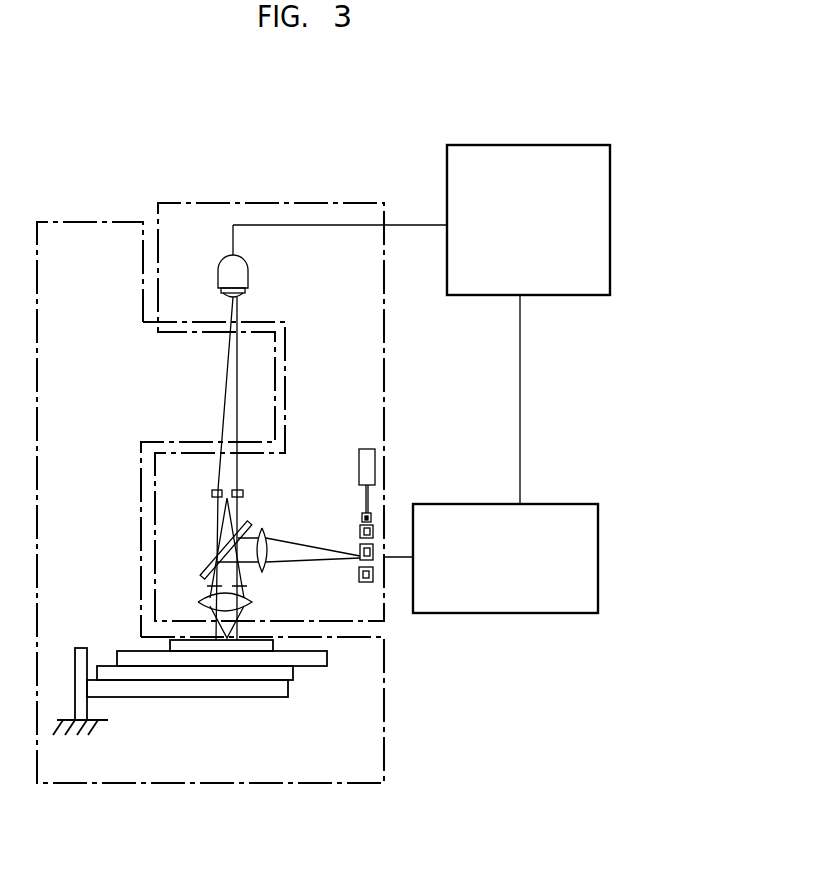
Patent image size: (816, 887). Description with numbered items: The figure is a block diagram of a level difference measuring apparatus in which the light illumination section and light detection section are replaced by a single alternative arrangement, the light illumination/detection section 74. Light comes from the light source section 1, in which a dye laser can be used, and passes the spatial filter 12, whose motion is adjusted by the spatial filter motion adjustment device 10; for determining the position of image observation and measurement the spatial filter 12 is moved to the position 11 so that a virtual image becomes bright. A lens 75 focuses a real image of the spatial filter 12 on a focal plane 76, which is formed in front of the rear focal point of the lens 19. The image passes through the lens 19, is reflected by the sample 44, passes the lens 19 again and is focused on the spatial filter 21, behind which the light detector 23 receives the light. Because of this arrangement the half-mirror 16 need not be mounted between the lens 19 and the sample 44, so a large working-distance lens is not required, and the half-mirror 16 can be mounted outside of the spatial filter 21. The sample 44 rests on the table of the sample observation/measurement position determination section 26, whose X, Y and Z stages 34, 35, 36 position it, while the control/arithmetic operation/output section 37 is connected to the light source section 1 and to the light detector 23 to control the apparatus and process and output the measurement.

The light source section 1 is at (493, 613).
The spatial filter motion adjustment device 10 is at (359, 452).
The position 11 is at (363, 515).
The spatial filter 12 is at (360, 563).
The half-mirror 16 is at (207, 567).
The lens 19 is at (205, 599).
The spatial filter 21 is at (212, 493).
The light detector 23 is at (248, 270).
The sample observation/measurement position determination section 26 is at (213, 783).
The X stage 34 is at (120, 650).
The Y stage 35 is at (93, 663).
The Z stage 36 is at (167, 697).
The control/arithmetic operation/output section 37 is at (610, 195).
The sample 44 is at (273, 645).
The light illumination/detection section 74 is at (384, 375).
The lens 75 is at (261, 528).
The focal plane 76 is at (247, 586).